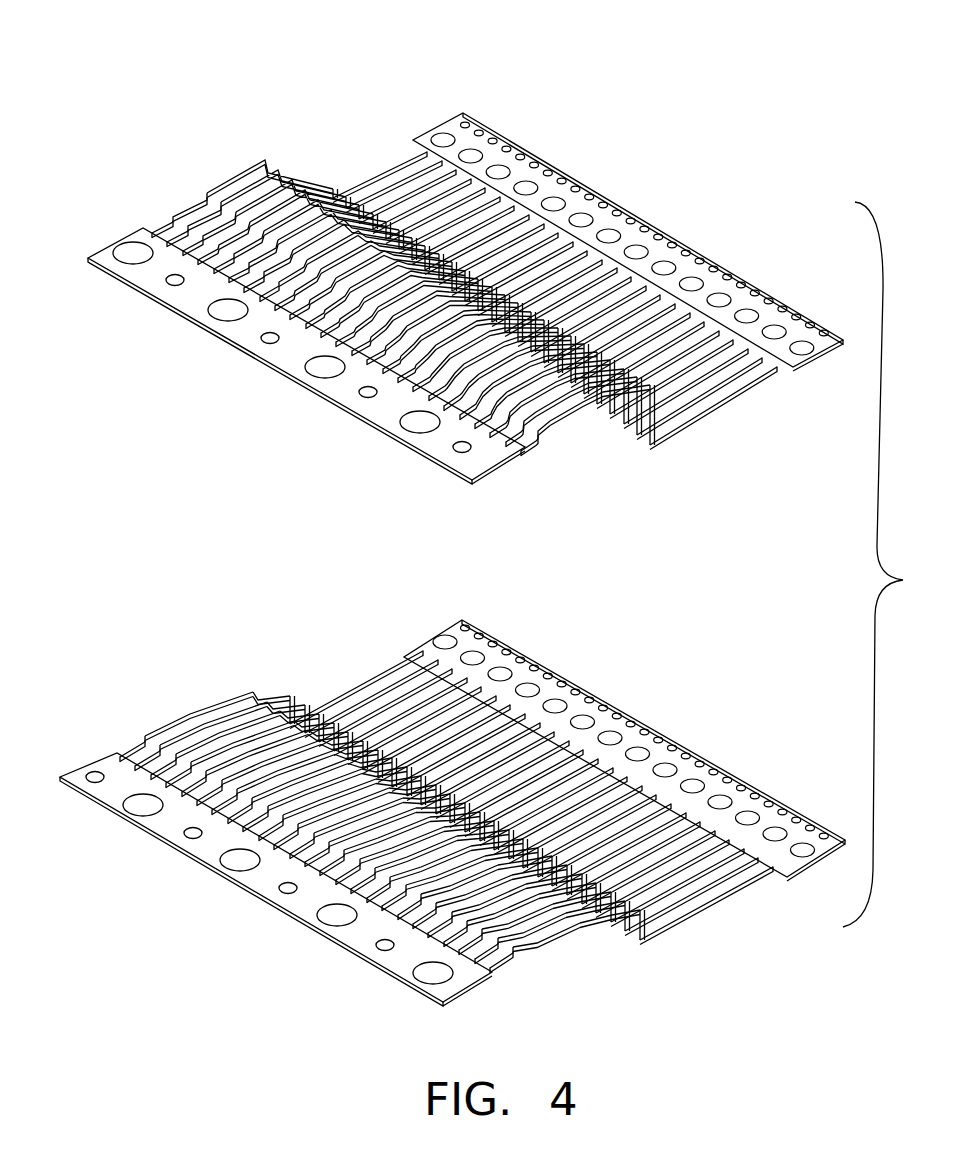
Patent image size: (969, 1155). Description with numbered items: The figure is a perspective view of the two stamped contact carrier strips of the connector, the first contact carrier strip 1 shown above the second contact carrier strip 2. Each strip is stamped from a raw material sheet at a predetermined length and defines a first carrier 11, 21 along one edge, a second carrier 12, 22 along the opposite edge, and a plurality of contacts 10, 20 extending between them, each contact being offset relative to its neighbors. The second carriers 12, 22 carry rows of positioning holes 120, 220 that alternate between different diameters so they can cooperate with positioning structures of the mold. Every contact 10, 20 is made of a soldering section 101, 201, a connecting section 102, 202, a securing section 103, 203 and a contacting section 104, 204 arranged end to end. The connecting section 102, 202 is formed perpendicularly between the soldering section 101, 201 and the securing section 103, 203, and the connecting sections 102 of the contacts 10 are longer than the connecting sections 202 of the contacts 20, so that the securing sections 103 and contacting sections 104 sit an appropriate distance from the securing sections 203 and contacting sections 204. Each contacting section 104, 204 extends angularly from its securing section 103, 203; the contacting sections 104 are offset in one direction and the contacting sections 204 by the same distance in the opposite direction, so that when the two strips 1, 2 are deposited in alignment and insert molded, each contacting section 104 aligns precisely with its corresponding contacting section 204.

The first contact carrier strip 1 is at (385, 132).
The contacts 10 is at (230, 172).
The first carrier 11 is at (517, 152).
The second carrier 12 is at (297, 358).
The positioning holes 120 is at (175, 288).
The soldering section 101 is at (740, 372).
The connecting section 102 is at (668, 412).
The securing section 103 is at (632, 444).
The contacting section 104 is at (560, 430).
The second contact carrier strip 2 is at (350, 678).
The contacts 20 is at (232, 703).
The first carrier 21 is at (623, 742).
The second carrier 22 is at (310, 898).
The positioning holes 220 is at (151, 810).
The soldering section 201 is at (700, 907).
The connecting section 202 is at (641, 942).
The securing section 203 is at (622, 930).
The contacting section 204 is at (540, 947).